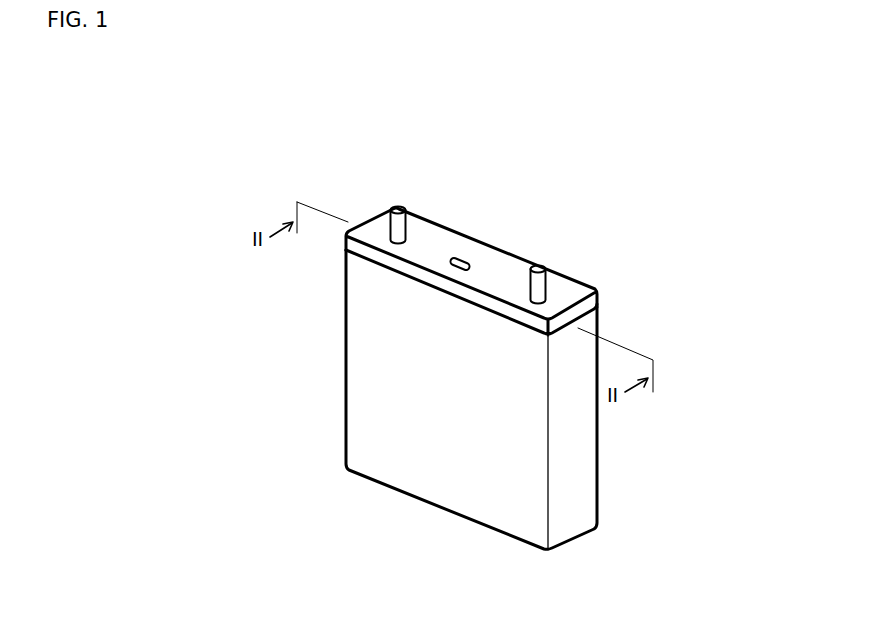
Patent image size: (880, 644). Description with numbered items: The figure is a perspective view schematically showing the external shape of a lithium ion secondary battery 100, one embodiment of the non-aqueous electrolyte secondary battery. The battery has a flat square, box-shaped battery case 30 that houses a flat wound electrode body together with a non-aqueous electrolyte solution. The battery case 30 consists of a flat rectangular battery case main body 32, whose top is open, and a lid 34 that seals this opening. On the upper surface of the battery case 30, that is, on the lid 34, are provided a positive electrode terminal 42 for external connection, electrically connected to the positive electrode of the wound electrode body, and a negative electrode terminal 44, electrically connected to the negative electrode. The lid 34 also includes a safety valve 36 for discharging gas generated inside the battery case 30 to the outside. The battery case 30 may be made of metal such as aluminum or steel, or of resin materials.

The lithium ion secondary battery 100 is at (709, 171).
The battery case 30 is at (447, 481).
The battery case main body 32 is at (588, 493).
The lid 34 is at (593, 302).
The safety valve 36 is at (456, 258).
The positive electrode terminal 42 is at (397, 208).
The negative electrode terminal 44 is at (538, 266).